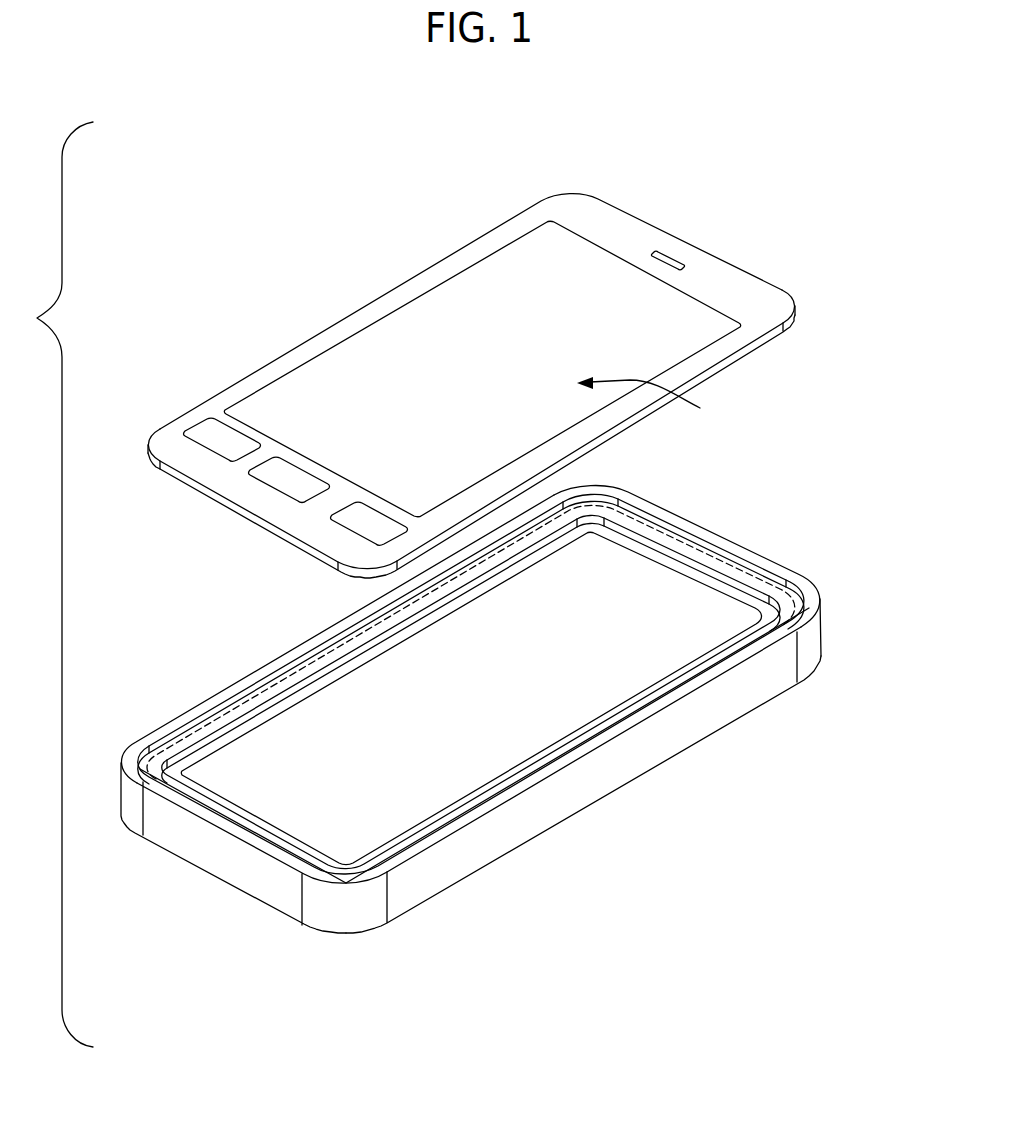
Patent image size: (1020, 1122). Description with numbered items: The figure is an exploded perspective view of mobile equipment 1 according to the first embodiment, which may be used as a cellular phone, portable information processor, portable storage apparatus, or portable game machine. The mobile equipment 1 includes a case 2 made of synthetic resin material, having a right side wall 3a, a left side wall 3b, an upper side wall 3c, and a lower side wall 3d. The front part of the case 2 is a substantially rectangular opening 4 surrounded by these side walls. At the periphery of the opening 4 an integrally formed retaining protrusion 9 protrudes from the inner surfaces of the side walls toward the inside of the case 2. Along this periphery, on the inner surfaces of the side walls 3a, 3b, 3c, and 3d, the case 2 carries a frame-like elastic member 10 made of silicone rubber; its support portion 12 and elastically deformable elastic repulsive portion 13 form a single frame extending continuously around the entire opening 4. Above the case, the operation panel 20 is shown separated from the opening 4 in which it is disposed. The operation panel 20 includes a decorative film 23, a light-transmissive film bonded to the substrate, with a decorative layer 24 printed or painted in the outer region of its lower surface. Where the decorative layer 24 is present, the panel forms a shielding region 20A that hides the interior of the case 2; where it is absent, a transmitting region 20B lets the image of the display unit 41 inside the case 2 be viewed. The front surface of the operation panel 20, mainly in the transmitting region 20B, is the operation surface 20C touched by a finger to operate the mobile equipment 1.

The mobile equipment 1 is at (836, 548).
The case 2 is at (808, 647).
The right side wall 3a is at (598, 778).
The left side wall 3b is at (240, 682).
The upper side wall 3c is at (722, 540).
The lower side wall 3d is at (227, 863).
The opening 4 is at (592, 497).
The retaining protrusion 9 is at (293, 662).
The elastic member 10 is at (650, 573).
The support portion 12 is at (493, 565).
The elastic repulsive portion 13 is at (250, 705).
The operation panel 20 is at (615, 186).
The shielding region 20A is at (737, 290).
The transmitting region 20B is at (455, 303).
The operation surface 20C is at (700, 408).
The decorative film 23 is at (337, 372).
The decorative layer 24 is at (210, 477).
The display unit 41 is at (453, 778).